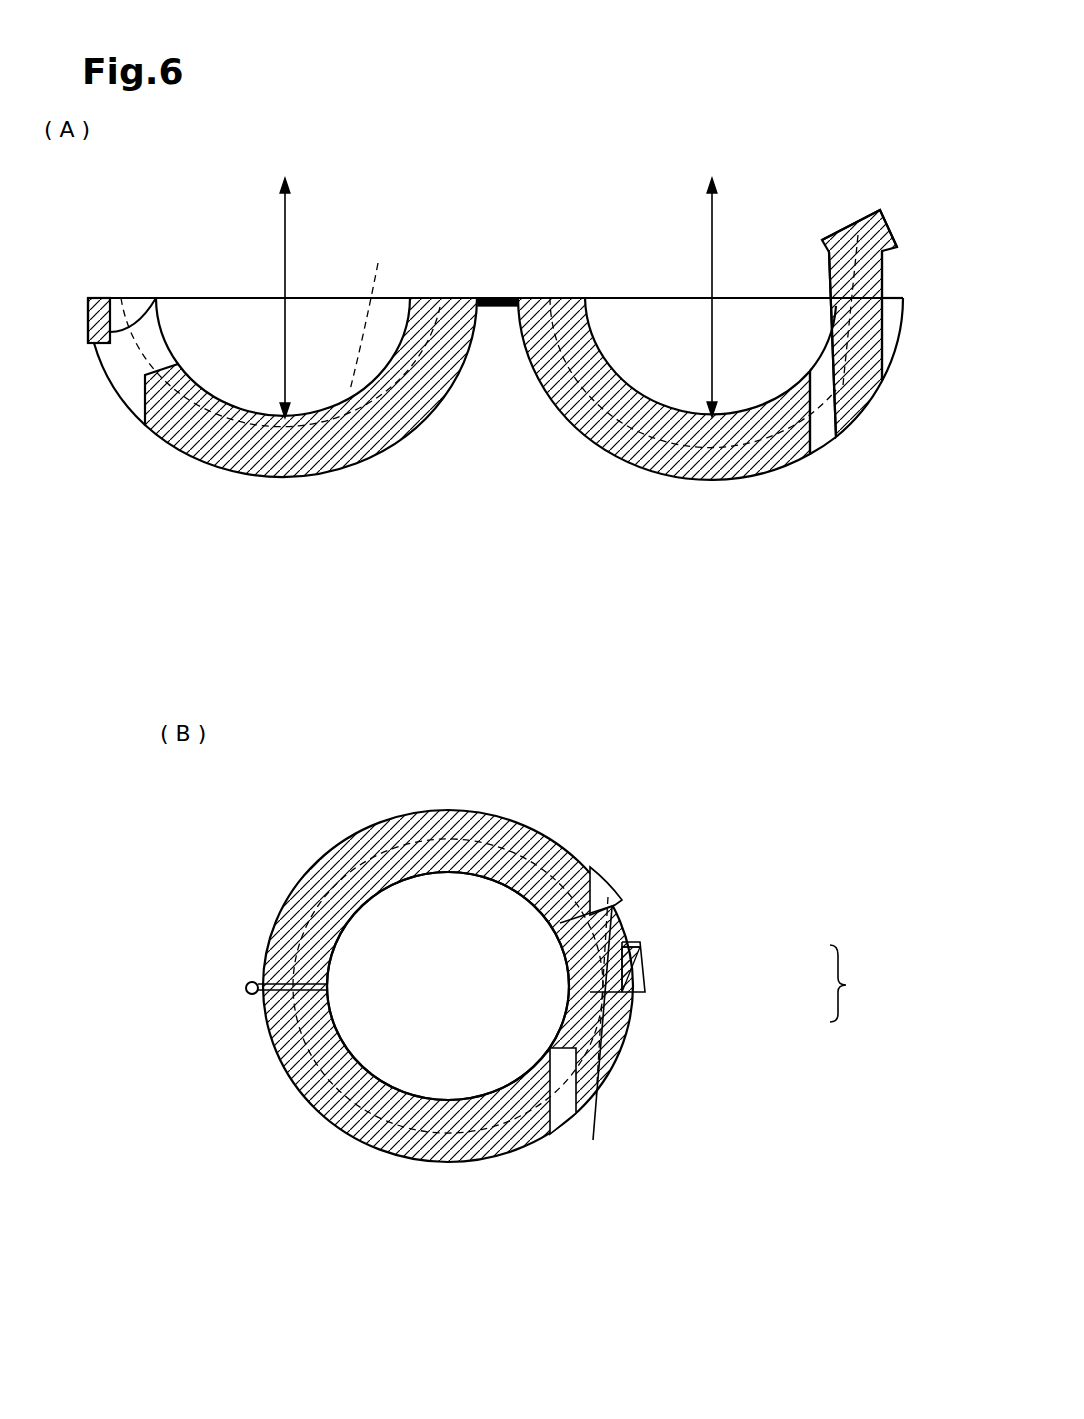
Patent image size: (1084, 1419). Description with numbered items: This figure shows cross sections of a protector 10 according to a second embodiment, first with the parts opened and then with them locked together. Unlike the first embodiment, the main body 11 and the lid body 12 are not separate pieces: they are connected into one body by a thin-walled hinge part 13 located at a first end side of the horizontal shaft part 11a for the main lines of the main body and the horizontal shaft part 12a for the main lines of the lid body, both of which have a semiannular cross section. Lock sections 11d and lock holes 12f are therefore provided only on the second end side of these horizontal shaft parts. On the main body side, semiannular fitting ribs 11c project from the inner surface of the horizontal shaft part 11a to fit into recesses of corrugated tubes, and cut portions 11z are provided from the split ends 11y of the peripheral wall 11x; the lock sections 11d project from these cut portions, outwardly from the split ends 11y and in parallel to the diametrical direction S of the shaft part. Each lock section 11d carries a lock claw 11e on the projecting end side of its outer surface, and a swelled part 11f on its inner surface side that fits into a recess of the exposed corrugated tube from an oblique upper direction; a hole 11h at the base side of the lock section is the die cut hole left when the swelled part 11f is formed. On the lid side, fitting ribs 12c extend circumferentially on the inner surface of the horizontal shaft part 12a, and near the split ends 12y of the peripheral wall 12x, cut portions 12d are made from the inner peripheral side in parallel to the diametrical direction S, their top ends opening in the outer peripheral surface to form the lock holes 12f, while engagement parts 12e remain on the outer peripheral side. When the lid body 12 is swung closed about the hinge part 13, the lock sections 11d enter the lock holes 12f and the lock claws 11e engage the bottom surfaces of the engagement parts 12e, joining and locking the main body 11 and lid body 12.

The protector 10 is at (850, 983).
The main body 11 is at (737, 481).
The horizontal shaft part for the main lines 11a is at (480, 1170).
The fitting ribs 11c is at (372, 1150).
The lock sections 11d is at (883, 268).
The lock claws 11e is at (883, 231).
The swelled parts 11f is at (847, 265).
The holes 11h is at (823, 433).
The peripheral wall 11x is at (622, 432).
The split ends 11y is at (889, 297).
The cut portions 11z is at (883, 317).
The lid body 12 is at (349, 477).
The horizontal shaft part for the main lines 12a is at (393, 812).
The fitting ribs 12c is at (490, 862).
The cut portions 12d is at (148, 320).
The engagement parts 12e is at (92, 342).
The lock holes 12f is at (110, 366).
The peripheral wall 12x is at (157, 433).
The split ends 12y is at (100, 298).
The thin-walled hinge part 13 is at (497, 298).
The diametrical direction S is at (283, 327).